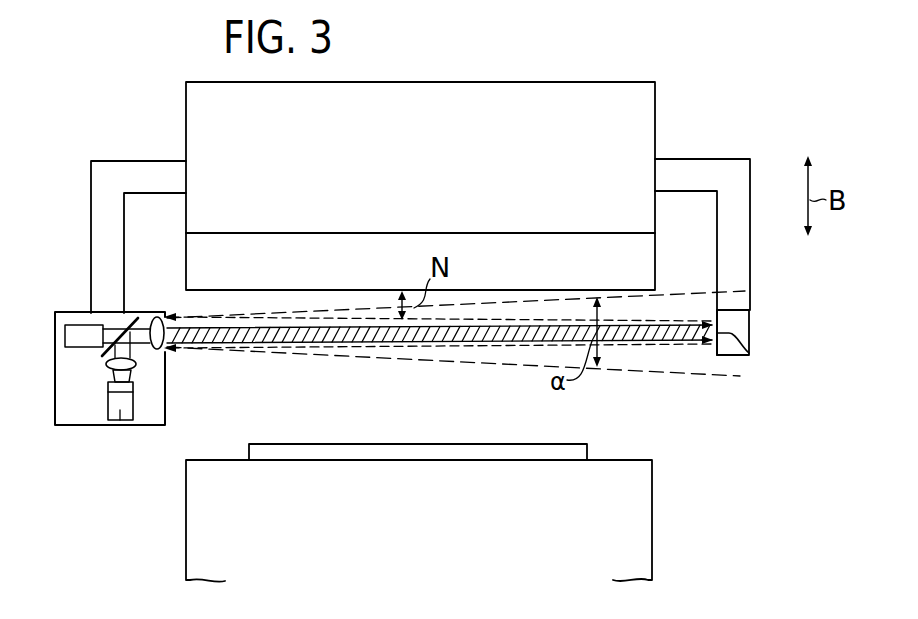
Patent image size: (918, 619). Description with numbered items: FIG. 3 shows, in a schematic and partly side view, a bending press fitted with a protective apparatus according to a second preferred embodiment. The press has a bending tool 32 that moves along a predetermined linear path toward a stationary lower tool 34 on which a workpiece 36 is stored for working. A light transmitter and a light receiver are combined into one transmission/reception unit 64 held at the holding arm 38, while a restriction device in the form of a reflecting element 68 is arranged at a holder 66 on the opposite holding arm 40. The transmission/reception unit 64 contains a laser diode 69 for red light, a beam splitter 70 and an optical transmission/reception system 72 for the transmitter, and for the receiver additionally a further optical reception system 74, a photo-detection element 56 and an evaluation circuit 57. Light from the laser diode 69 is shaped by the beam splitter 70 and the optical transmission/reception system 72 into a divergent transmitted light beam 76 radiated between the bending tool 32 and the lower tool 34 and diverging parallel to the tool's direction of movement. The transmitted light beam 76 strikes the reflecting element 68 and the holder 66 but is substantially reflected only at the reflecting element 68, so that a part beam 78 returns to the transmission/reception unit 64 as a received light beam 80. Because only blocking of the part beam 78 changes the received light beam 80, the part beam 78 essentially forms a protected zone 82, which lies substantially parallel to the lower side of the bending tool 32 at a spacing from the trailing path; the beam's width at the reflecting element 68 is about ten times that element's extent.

The bending tool 32 is at (571, 100).
The lower tool 34 is at (187, 512).
The workpiece 36 is at (560, 453).
The holding arm 38 is at (150, 170).
The holding arm 40 is at (686, 172).
The photo-detection element 56 is at (126, 389).
The evaluation circuit 57 is at (125, 411).
The transmission/reception unit 64 is at (50, 323).
The holder 66 is at (740, 321).
The reflecting element 68 is at (749, 350).
The laser diode 69 is at (78, 325).
The beam splitter 70 is at (122, 316).
The optical transmission/reception system 72 is at (154, 317).
The further optical reception system 74 is at (138, 364).
The transmitted light beam 76 is at (680, 368).
The part beam 78 is at (321, 346).
The received light beam 80 is at (384, 347).
The protected zone 82 is at (497, 338).